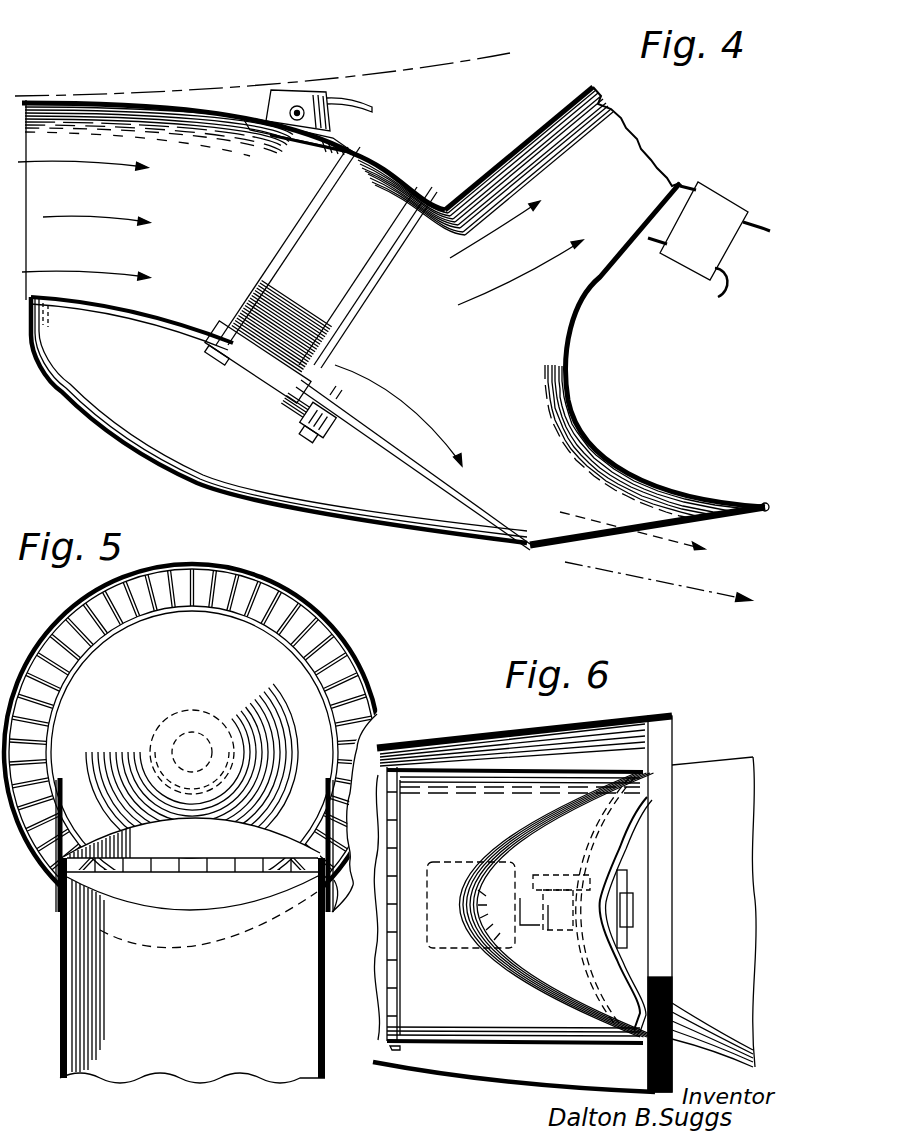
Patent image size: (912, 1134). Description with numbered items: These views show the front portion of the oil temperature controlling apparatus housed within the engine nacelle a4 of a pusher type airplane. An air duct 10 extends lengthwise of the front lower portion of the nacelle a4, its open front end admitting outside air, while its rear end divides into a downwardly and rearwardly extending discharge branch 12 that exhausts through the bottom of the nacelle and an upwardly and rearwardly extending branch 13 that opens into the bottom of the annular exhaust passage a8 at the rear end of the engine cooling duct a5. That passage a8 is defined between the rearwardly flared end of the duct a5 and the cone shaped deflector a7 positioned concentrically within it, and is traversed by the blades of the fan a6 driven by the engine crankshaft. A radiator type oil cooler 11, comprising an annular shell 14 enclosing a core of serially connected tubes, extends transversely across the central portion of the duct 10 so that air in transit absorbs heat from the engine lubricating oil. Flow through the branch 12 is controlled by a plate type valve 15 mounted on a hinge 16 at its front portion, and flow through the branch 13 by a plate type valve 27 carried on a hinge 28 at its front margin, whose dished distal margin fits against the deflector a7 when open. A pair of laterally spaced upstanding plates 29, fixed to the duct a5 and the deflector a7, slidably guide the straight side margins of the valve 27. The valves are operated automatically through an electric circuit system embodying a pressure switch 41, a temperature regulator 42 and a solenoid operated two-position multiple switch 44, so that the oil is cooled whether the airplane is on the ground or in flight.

In FIG. 4, the air duct 10 is at (50, 298).
In FIG. 4, the oil cooler 11 is at (272, 263).
In FIG. 4, the discharge branch 12 is at (602, 463).
In FIG. 4, the discharge branch 13 is at (561, 118).
In FIG. 5, the discharge branch 13 is at (317, 996).
In FIG. 4, the annular shell 14 is at (319, 298).
In FIG. 4, the plate type valve 15 is at (603, 543).
In FIG. 4, the hinge 16 is at (533, 551).
In FIG. 5, the plate type valve 27 is at (191, 883).
In FIG. 6, the plate type valve 27 is at (555, 905).
In FIG. 5, the hinge 28 is at (219, 868).
In FIG. 6, the hinge 28 is at (401, 988).
In FIG. 5, the upstanding plates 29 is at (61, 808).
In FIG. 6, the upstanding plates 29 is at (547, 772).
In FIG. 4, the pressure switch 41 is at (330, 120).
In FIG. 4, the temperature regulator 42 is at (303, 430).
In FIG. 4, the 2-position multiple switch 44 is at (717, 247).
In FIG. 4, the nacelle a4 is at (384, 529).
In FIG. 5, the duct a5 is at (192, 752).
In FIG. 6, the duct a5 is at (577, 718).
In FIG. 5, the fan a6 is at (216, 752).
In FIG. 6, the fan a6 is at (660, 740).
In FIG. 5, the cone shaped deflector a7 is at (192, 759).
In FIG. 6, the cone shaped deflector a7 is at (505, 972).
In FIG. 5, the annular exhaust passage a8 is at (231, 752).